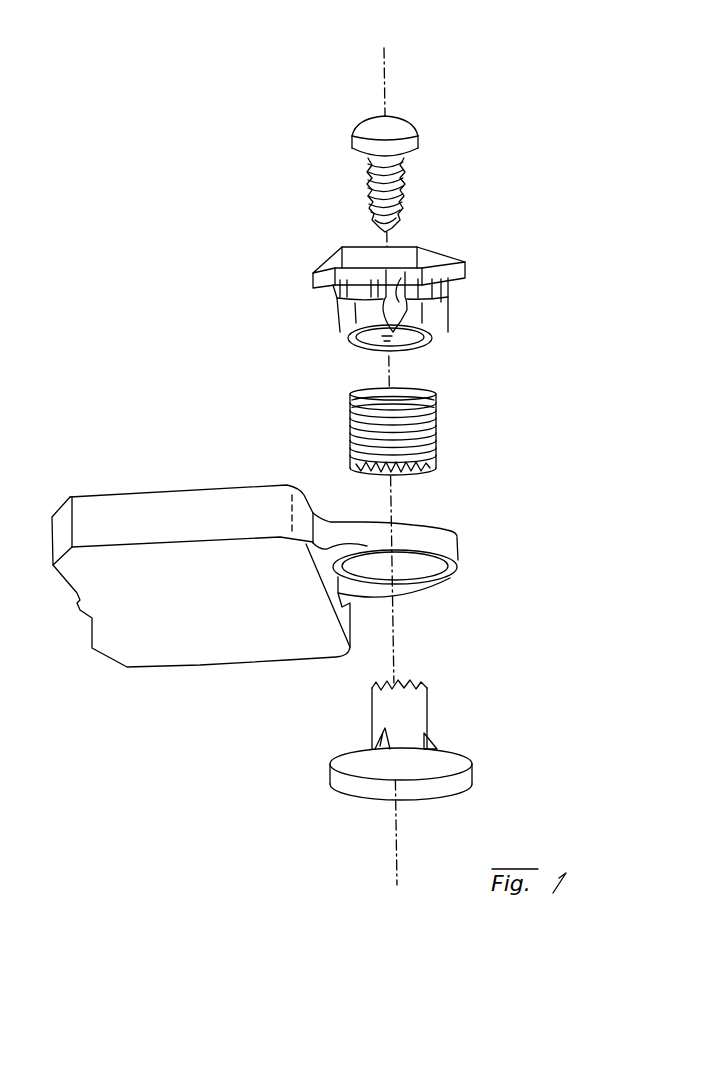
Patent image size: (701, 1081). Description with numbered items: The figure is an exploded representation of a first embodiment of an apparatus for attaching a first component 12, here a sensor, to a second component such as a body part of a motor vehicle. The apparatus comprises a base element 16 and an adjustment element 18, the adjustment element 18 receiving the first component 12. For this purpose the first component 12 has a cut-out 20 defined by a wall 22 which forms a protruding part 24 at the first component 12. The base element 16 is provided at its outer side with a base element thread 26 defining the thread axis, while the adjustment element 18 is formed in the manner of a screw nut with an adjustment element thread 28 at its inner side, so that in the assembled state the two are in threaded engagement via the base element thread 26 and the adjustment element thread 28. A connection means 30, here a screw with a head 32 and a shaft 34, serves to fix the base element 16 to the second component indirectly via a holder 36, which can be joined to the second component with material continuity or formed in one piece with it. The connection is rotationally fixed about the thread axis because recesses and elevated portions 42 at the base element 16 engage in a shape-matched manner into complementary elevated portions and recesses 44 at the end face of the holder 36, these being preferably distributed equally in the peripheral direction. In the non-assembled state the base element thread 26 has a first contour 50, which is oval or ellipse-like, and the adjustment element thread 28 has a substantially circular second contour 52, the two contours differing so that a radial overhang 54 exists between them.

The first component 12 is at (292, 541).
The base element 16 is at (447, 430).
The adjustment element 18 is at (391, 301).
The cut-out 20 is at (423, 567).
The wall 22 is at (453, 548).
The protruding part 24 is at (446, 521).
The base element thread 26 is at (437, 418).
The adjustment element thread 28 is at (413, 340).
The connection means 30 is at (431, 161).
The head 32 is at (401, 132).
The shaft 34 is at (416, 162).
The holder 36 is at (430, 723).
The recesses and elevated portions 42 is at (424, 469).
The elevated portions and recesses 44 is at (407, 683).
The first contour 50 is at (357, 355).
The second contour 52 is at (323, 288).
The radial overhang 54 is at (325, 268).